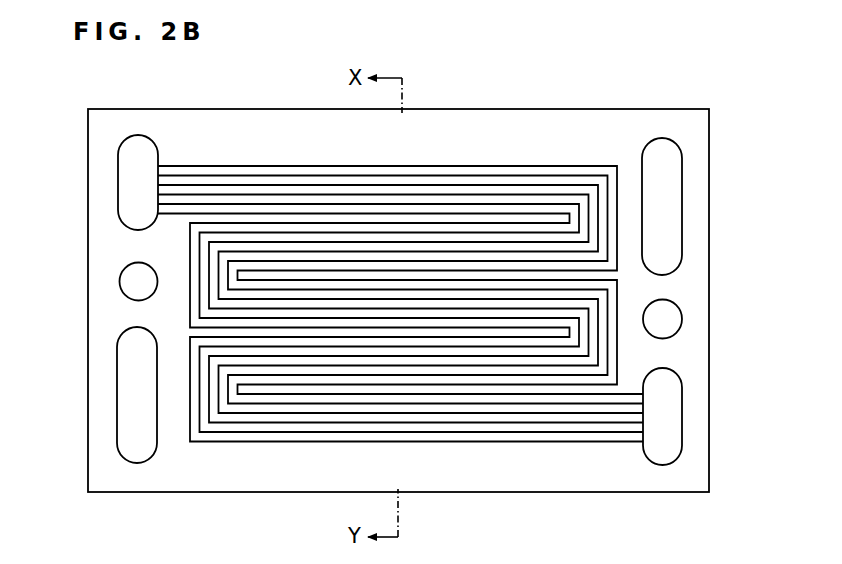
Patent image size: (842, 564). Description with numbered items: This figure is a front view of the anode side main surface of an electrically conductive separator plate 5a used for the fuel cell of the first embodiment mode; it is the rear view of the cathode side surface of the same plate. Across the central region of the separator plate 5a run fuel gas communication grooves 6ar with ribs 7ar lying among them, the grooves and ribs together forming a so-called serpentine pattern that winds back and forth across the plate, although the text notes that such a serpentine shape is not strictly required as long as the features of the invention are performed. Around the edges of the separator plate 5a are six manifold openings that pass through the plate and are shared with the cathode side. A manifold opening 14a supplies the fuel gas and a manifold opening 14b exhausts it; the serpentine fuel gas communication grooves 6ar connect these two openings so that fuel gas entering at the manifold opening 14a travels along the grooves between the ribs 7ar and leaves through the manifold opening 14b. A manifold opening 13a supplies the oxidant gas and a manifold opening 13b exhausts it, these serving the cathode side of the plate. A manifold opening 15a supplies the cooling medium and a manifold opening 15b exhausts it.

The electrically conductive separator plate 5a is at (253, 107).
The fuel gas communication grooves 6ar is at (300, 170).
The ribs 7ar is at (365, 182).
The manifold opening for supplying the oxidant gas 13a is at (668, 188).
The manifold opening for exhausting the oxidant gas 13b is at (135, 350).
The manifold opening for supplying the fuel gas 14a is at (135, 181).
The manifold opening for exhausting the fuel gas 14b is at (670, 390).
The manifold opening for supplying the cooling medium 15a is at (663, 313).
The manifold opening for exhausting the cooling medium 15b is at (137, 285).